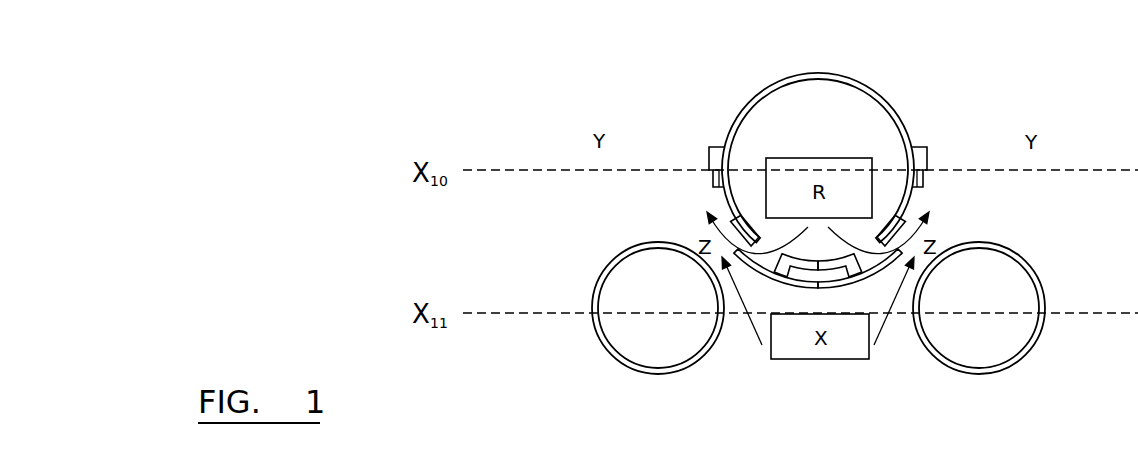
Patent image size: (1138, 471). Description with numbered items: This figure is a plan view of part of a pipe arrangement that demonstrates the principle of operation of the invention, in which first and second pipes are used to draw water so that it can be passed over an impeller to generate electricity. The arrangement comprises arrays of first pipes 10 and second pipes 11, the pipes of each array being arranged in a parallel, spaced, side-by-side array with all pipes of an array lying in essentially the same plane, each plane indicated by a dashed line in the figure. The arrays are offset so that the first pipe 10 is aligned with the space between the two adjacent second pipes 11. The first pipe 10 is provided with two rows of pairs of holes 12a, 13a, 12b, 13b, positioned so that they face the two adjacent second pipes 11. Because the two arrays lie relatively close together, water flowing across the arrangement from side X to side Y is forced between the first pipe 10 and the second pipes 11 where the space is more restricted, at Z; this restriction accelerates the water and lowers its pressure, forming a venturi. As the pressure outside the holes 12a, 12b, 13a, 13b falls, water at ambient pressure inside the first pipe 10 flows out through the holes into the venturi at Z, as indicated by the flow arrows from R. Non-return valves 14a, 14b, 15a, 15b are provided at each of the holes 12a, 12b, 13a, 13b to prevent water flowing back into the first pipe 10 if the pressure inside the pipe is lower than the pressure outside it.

The first pipe 10 is at (905, 116).
The second pipe 11 is at (613, 366).
The hole 12a is at (770, 236).
The hole 12b is at (866, 236).
The hole 13a is at (745, 193).
The hole 13b is at (891, 193).
The non-return valve 14a is at (772, 283).
The non-return valve 14b is at (865, 284).
The non-return valve 15a is at (709, 202).
The non-return valve 15b is at (927, 202).